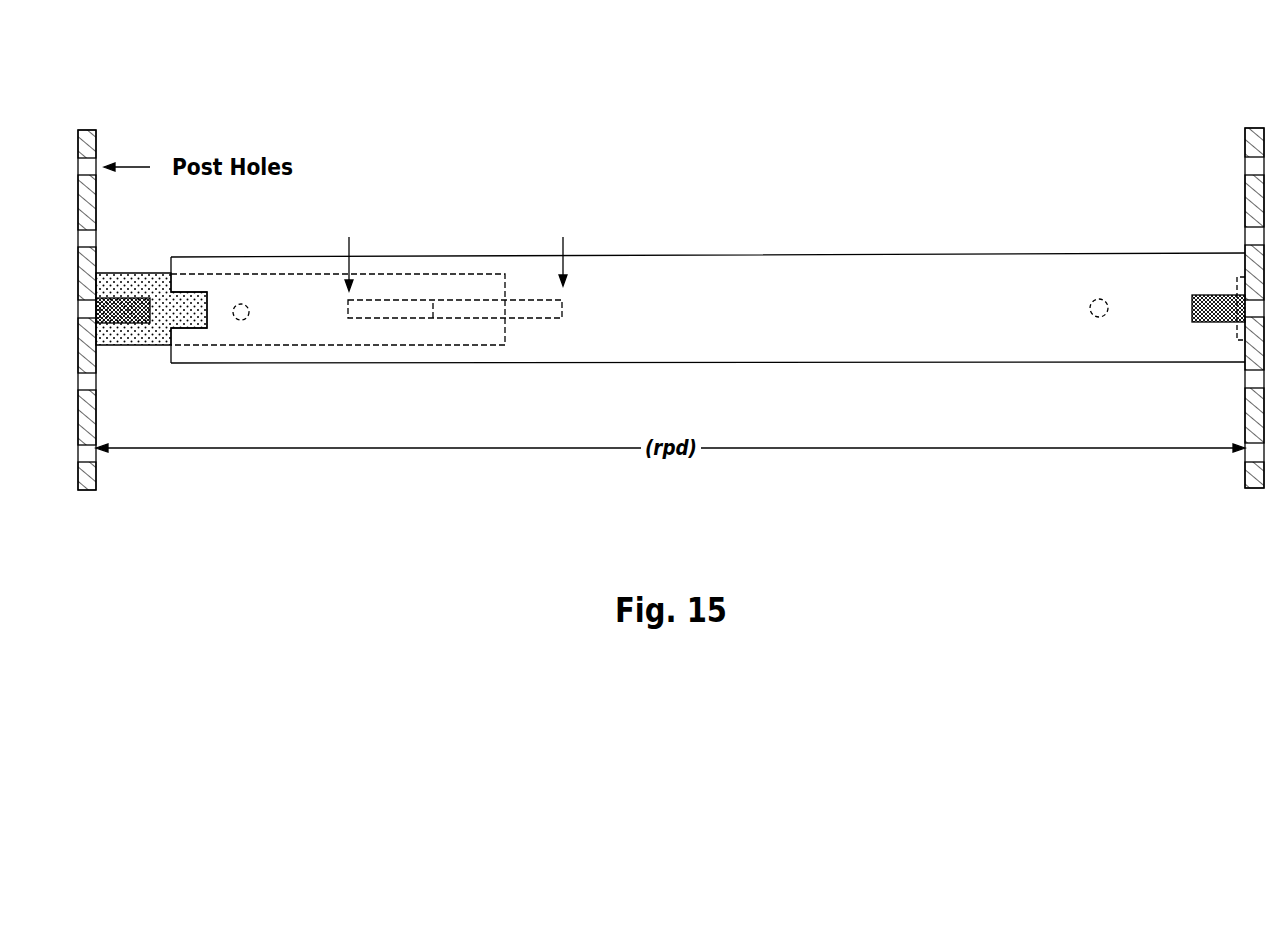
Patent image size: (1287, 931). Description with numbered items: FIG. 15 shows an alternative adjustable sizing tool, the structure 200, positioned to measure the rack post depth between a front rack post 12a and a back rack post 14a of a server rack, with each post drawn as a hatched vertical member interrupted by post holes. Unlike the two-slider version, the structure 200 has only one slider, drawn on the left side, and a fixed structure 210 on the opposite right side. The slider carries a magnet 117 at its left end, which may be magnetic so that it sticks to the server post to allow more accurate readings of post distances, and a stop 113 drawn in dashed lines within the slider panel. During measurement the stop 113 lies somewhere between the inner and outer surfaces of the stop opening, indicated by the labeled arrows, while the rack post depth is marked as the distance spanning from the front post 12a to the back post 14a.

The structure 200 is at (357, 51).
The fixed structure 210 is at (1192, 234).
The magnet 117 is at (100, 335).
The stop 113 is at (468, 310).
The front post 12a is at (87, 506).
The back post 14a is at (1254, 505).